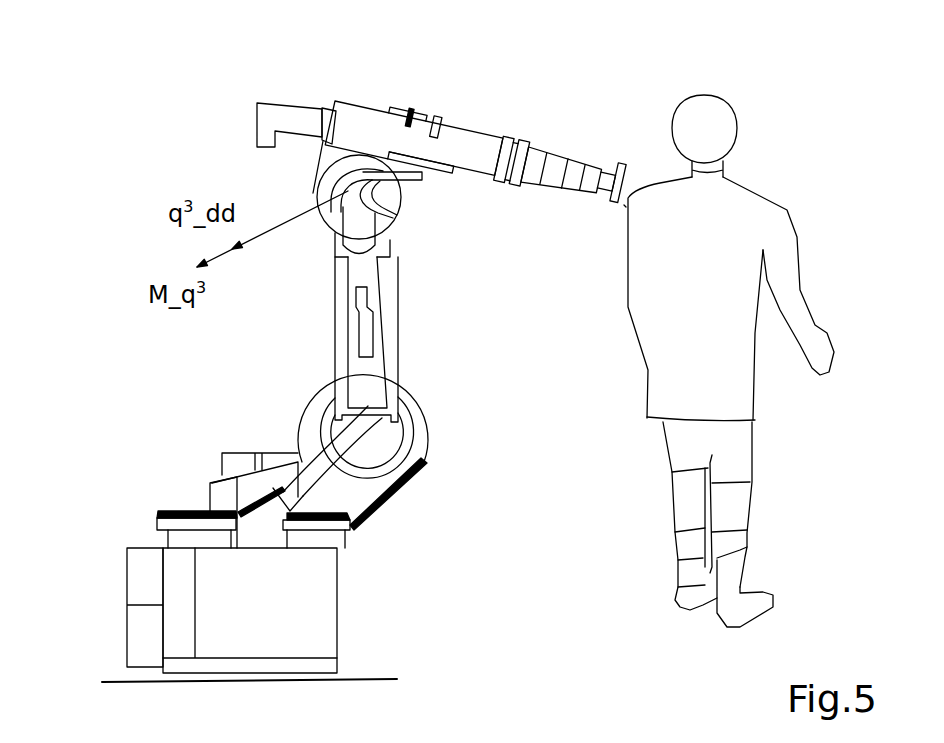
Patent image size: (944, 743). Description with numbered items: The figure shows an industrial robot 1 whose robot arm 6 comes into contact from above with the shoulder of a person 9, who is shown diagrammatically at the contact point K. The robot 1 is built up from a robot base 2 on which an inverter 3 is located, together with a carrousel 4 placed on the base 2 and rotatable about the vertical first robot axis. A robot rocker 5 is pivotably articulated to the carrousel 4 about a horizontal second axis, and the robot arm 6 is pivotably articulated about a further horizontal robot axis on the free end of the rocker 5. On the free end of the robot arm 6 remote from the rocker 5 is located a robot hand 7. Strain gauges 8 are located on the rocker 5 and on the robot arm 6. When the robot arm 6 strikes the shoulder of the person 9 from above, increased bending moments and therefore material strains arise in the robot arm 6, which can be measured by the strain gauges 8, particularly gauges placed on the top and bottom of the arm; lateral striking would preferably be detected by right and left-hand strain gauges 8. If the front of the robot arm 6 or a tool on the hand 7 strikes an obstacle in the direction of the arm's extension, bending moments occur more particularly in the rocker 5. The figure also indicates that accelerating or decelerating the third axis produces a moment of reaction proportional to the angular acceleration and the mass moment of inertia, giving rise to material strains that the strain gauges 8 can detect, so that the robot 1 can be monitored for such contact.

The robot 1 is at (88, 615).
The robot base 2 is at (283, 595).
The inverter 3 is at (143, 580).
The carrousel 4 is at (213, 467).
The robot rocker 5 is at (371, 367).
The robot arm 6 is at (473, 148).
The robot hand 7 is at (565, 150).
The strain gauges 8 is at (357, 320).
The person 9 is at (757, 408).
The collision point K is at (624, 205).